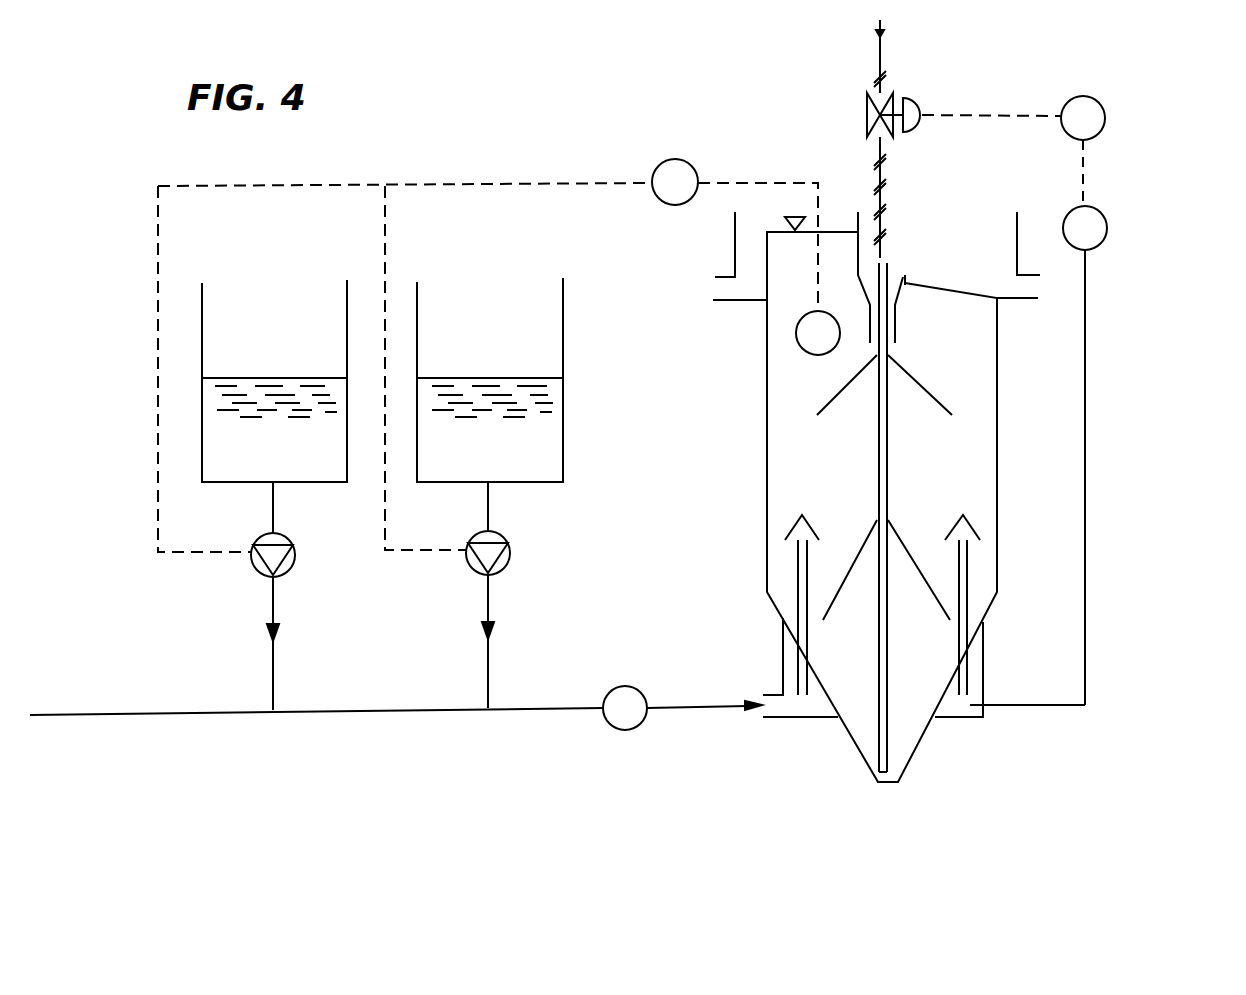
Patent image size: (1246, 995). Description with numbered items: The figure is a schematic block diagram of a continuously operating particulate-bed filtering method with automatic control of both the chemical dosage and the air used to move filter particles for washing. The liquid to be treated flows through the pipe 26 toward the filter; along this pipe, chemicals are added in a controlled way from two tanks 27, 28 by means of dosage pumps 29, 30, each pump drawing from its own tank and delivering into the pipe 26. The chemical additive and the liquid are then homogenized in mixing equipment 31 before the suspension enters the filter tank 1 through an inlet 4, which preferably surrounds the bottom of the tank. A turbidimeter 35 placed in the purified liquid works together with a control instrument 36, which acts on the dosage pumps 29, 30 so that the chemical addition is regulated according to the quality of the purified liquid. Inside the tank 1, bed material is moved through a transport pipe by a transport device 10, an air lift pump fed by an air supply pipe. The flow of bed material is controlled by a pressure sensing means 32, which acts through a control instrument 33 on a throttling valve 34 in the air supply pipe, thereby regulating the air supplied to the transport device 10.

The tank 1 is at (998, 415).
The inlet 4 is at (956, 717).
The transport device 10 is at (890, 460).
The pipe 26 is at (192, 716).
The tank 27 is at (288, 452).
The tank 28 is at (503, 452).
The dosage pump 29 is at (295, 566).
The dosage pump 30 is at (510, 564).
The mixing equipment 31 is at (612, 727).
The pressure sensing means 32 is at (1107, 228).
The control instrument 33 is at (1105, 116).
The throttling valve 34 is at (922, 104).
The turbidimeter 35 is at (796, 336).
The control instrument 36 is at (676, 159).